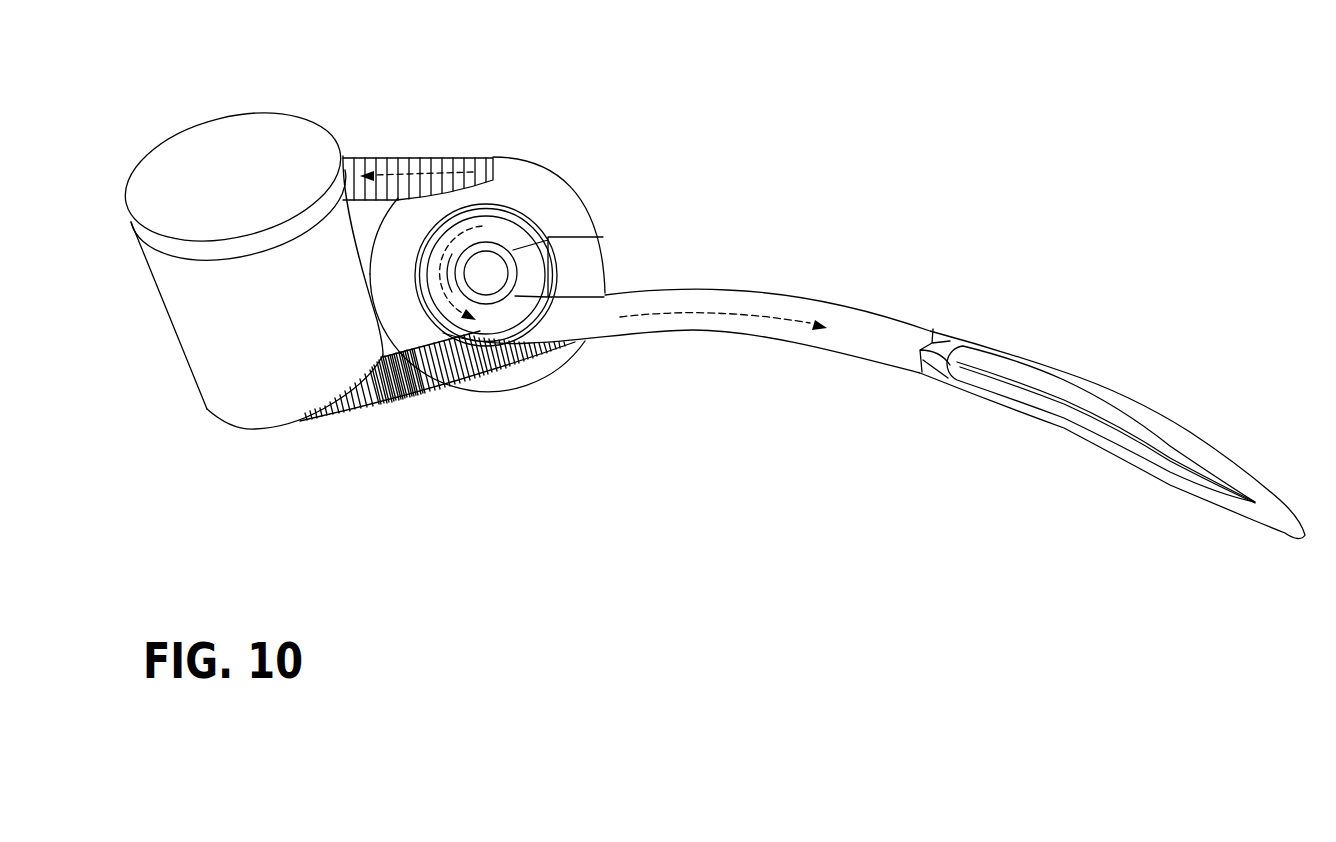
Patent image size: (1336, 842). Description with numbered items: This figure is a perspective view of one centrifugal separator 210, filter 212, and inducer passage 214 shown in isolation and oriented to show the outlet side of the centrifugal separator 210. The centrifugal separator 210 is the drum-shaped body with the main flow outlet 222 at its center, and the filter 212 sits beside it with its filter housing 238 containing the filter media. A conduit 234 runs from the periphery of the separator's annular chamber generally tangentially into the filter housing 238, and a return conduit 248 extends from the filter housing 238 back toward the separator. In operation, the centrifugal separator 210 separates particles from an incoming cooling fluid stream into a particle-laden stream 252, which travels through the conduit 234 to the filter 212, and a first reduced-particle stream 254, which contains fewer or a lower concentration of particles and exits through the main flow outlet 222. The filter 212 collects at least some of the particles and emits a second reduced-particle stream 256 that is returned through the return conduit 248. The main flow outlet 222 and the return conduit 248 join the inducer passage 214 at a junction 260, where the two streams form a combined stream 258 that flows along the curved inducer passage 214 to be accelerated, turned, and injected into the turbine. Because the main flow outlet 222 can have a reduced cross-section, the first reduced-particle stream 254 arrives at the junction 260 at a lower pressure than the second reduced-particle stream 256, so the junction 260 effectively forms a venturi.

The centrifugal separator 210 is at (610, 212).
The filter 212 is at (158, 146).
The inducer passage 214 is at (802, 307).
The main flow outlet 222 is at (560, 237).
The conduit 234 is at (385, 176).
The filter housing 238 is at (205, 350).
The return conduit 248 is at (432, 392).
The particle-laden stream 252 is at (423, 153).
The first reduced-particle stream 254 is at (483, 226).
The second reduced-particle stream 256 is at (430, 393).
The combined stream 258 is at (703, 318).
The junction 260 is at (530, 353).